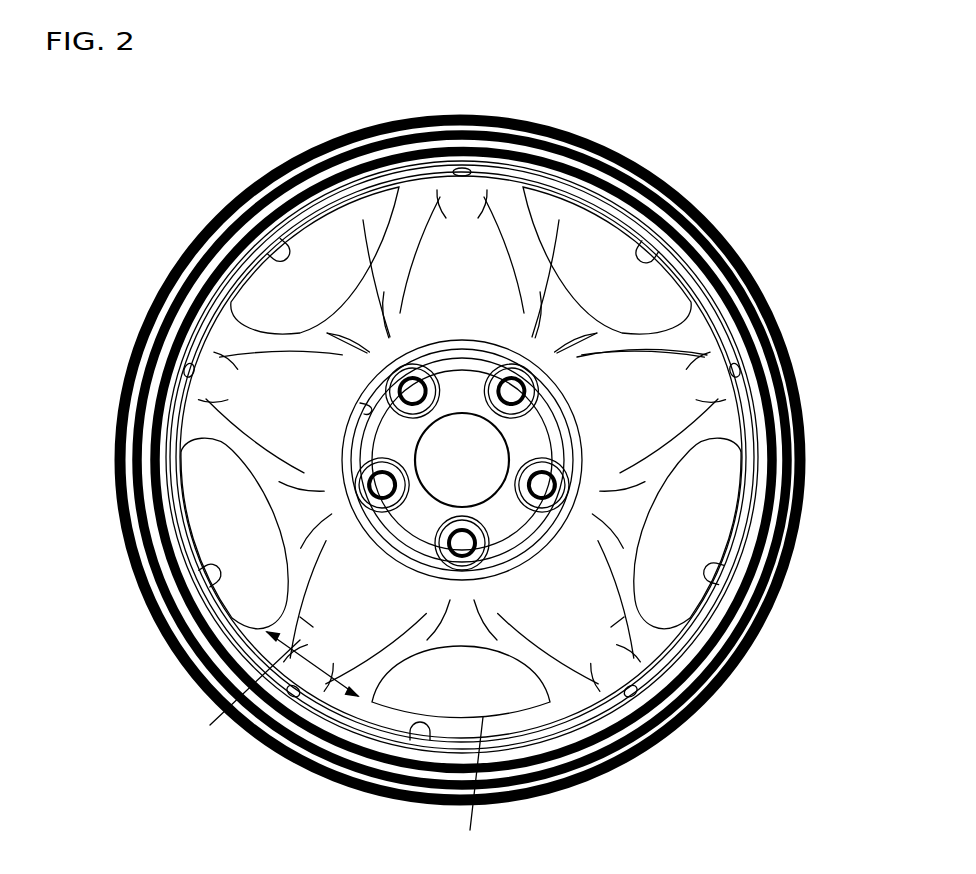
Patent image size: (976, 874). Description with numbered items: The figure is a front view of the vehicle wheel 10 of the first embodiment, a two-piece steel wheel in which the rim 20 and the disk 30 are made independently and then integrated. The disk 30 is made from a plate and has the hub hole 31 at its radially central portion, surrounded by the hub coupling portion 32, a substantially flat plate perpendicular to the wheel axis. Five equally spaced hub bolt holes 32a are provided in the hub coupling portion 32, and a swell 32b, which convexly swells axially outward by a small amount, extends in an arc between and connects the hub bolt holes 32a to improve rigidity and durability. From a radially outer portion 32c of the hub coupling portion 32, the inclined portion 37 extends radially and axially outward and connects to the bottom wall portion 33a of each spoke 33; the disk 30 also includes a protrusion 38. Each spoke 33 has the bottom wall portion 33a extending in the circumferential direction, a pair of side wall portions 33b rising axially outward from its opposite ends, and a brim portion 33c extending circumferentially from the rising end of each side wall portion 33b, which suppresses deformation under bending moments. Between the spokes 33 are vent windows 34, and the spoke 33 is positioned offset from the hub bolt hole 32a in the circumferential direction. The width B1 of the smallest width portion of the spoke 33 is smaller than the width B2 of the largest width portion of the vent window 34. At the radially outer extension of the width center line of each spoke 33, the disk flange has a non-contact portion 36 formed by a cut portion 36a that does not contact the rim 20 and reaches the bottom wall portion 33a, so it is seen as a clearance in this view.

The vehicle wheel 10 is at (770, 270).
The rim 20 is at (217, 222).
The disk 30 is at (655, 655).
The hub hole 31 is at (492, 445).
The hub coupling portion 32 is at (464, 424).
The hub bolt hole 32a is at (545, 490).
The swell 32b is at (580, 432).
The radially outer portion of the hub coupling portion 32c is at (360, 403).
The spoke 33 is at (488, 452).
The bottom wall portion 33a is at (437, 193).
The side wall portion 33b is at (356, 228).
The brim portion 33c is at (340, 227).
The vent window 34 is at (275, 232).
The non-contact portion 36 is at (465, 439).
The cut portion 36a is at (460, 167).
The inclined portion 37 is at (180, 430).
The protrusion 38 is at (300, 513).
The width of a smallest width portion of the spoke B1 is at (245, 700).
The width of a largest width portion of the vent window B2 is at (470, 786).